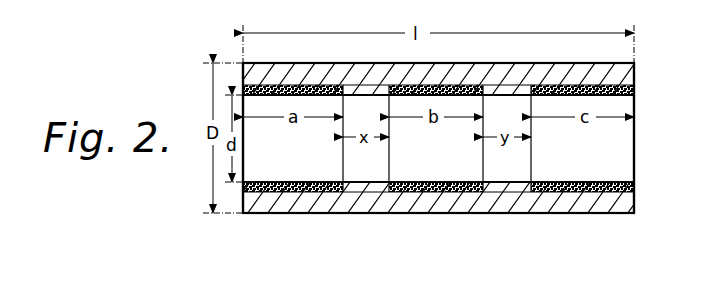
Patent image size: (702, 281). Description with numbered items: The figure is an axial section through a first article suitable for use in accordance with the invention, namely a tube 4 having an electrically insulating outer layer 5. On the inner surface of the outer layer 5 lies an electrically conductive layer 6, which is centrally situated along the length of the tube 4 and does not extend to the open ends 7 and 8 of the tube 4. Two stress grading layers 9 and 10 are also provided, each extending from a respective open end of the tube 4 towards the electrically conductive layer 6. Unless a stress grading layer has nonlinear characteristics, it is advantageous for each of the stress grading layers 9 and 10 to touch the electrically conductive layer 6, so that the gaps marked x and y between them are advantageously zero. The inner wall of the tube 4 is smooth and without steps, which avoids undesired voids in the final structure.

The tube 4 is at (273, 218).
The electrically insulating outer layer 5 is at (527, 205).
The electrically conductive layer 6 is at (400, 192).
The open end 7 is at (243, 64).
The open end 8 is at (634, 73).
The stress grading layer 9 is at (316, 192).
The stress grading layer 10 is at (607, 192).